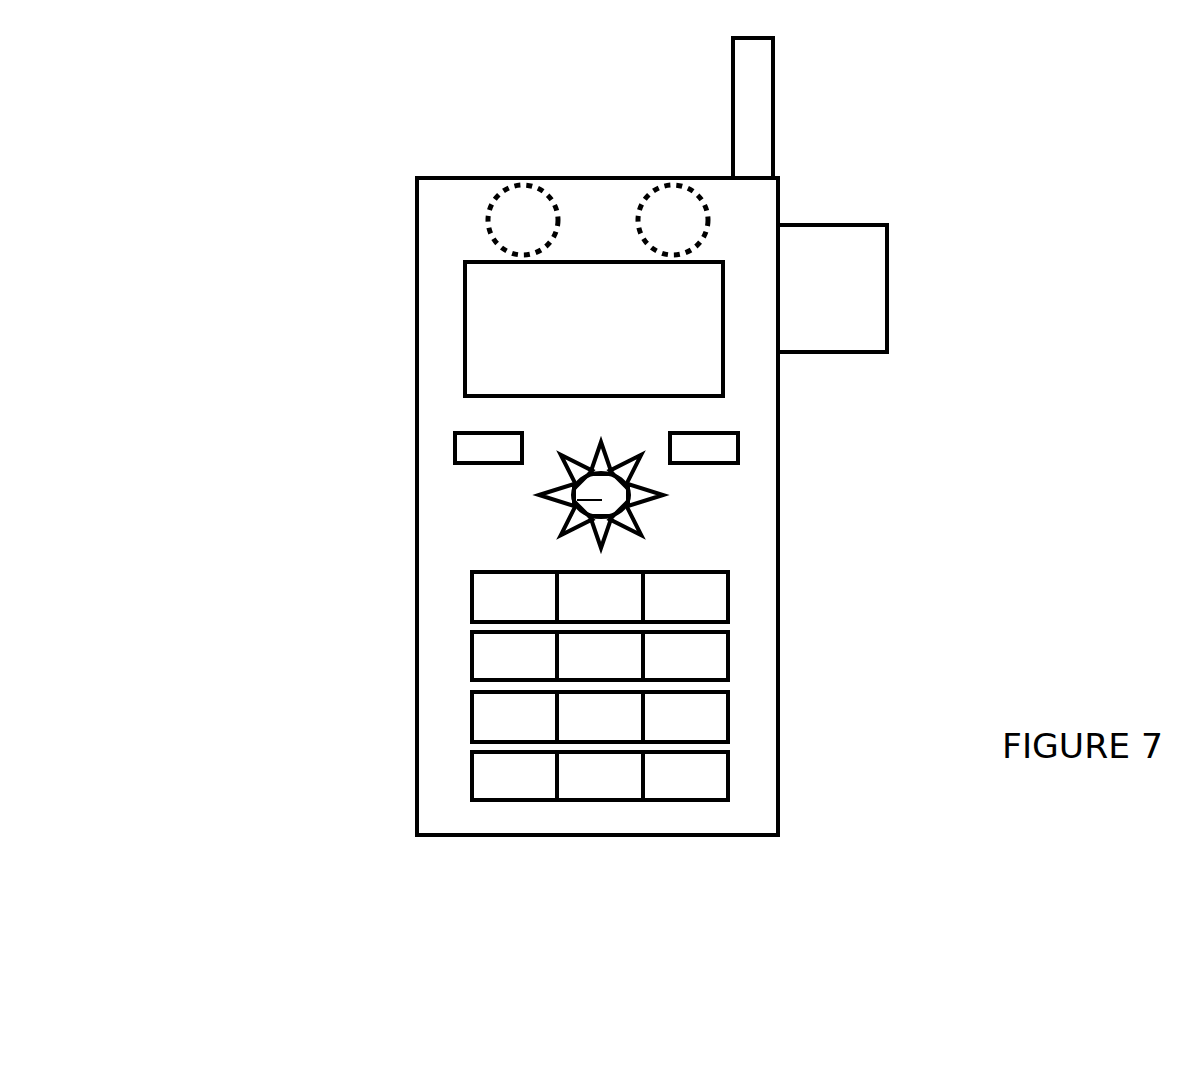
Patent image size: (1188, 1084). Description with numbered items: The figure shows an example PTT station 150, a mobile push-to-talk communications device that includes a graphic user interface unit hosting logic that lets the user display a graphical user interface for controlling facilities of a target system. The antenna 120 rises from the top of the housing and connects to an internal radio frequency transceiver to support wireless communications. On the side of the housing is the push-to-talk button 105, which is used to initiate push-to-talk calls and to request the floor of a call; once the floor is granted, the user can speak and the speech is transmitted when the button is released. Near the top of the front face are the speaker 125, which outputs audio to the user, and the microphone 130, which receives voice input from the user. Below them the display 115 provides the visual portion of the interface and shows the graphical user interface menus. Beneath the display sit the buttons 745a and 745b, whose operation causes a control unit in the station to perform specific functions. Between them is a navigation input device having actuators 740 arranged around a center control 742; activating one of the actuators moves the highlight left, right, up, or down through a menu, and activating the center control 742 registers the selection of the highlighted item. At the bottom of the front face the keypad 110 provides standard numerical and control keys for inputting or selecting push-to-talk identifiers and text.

The PTT station 150 is at (288, 201).
The antenna 120 is at (773, 88).
The push-to-talk button 105 is at (887, 287).
The speaker 125 is at (529, 200).
The microphone 130 is at (680, 200).
The display 115 is at (465, 327).
The button 745a is at (455, 450).
The button 745b is at (738, 450).
The actuators 740 is at (663, 495).
The center control 742 is at (540, 497).
The keypad 110 is at (472, 657).